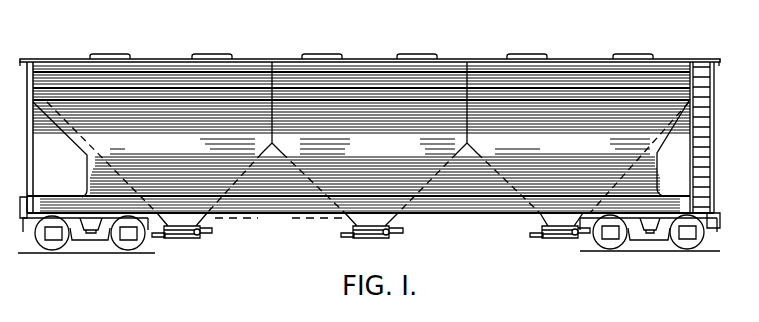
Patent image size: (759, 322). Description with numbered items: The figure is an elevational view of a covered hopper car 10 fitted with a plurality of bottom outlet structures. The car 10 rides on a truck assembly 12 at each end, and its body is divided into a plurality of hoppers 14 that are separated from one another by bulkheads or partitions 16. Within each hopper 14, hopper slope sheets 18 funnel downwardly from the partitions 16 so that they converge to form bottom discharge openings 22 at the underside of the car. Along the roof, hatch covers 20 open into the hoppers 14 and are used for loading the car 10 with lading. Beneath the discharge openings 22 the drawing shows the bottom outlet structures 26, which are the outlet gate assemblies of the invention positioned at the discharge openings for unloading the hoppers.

The covered hopper car 10 is at (561, 54).
The truck assembly 12 is at (143, 245).
The hopper 14 is at (194, 153).
The partition 16 is at (274, 115).
The hopper slope sheet 18 is at (125, 156).
The hatch cover 20 is at (116, 54).
The bottom discharge opening 22 is at (292, 221).
The discharge outlet gates 26 is at (205, 241).